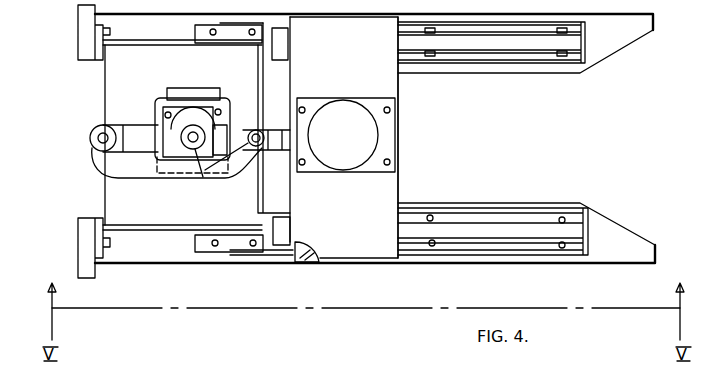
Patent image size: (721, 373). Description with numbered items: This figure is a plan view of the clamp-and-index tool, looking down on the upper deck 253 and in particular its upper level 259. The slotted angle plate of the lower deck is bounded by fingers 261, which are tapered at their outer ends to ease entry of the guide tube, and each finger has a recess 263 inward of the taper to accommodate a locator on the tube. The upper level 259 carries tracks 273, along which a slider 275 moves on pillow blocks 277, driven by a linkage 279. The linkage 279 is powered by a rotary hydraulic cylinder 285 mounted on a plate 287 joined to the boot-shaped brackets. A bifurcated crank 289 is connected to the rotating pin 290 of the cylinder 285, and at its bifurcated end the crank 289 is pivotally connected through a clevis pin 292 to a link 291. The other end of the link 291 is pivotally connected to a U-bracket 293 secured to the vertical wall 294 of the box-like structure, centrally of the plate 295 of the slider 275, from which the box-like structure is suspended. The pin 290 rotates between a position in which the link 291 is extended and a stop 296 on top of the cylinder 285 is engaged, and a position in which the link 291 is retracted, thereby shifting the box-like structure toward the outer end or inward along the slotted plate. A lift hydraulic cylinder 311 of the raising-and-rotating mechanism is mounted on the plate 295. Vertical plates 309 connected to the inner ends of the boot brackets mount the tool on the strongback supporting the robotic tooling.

The upper deck 253 is at (508, 161).
The upper level 259 is at (351, 274).
The fingers 261 is at (620, 40).
The recess 263 is at (503, 220).
The tracks 273 is at (535, 43).
The slider 275 is at (386, 208).
The pillow blocks 277 is at (306, 266).
The linkage 279 is at (220, 185).
The rotary hydraulic cylinder 285 is at (165, 100).
The plate 287 is at (110, 188).
The bifurcated crank 289 is at (122, 126).
The rotating pin 290 is at (207, 165).
The link 291 is at (147, 177).
The clevis pin 292 is at (98, 128).
The U-bracket 293 is at (264, 132).
The vertical wall 294 is at (242, 134).
The plate 295 is at (292, 185).
The stop 296 is at (217, 109).
The vertical plates 309 is at (80, 50).
The lift hydraulic cylinder 311 is at (372, 132).